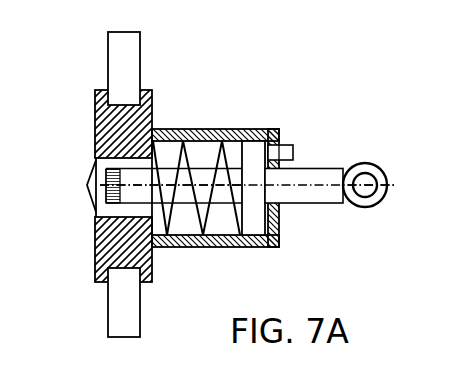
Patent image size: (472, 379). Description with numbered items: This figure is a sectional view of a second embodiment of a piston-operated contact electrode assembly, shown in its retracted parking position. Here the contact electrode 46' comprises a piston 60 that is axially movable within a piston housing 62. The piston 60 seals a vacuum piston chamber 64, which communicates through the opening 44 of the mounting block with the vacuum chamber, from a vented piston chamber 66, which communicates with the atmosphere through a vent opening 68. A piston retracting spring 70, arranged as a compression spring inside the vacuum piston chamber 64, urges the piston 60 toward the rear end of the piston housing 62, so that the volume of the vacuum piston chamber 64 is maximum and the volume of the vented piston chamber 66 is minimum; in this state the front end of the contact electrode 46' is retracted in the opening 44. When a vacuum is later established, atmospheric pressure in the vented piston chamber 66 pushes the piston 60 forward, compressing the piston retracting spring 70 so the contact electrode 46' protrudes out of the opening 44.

The opening 44 is at (103, 213).
The contact electrode 46' is at (196, 155).
The piston 60 is at (252, 155).
The piston housing 62 is at (281, 221).
The vacuum piston chamber 64 is at (222, 223).
The vented piston chamber 66 is at (280, 126).
The vent opening 68 is at (293, 151).
The piston retracting spring 70 is at (172, 212).